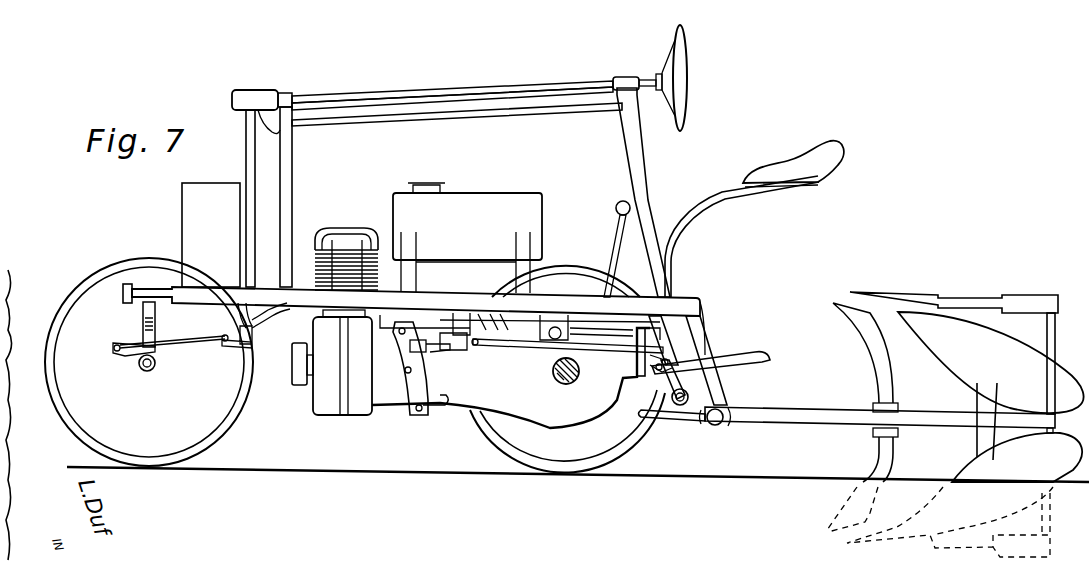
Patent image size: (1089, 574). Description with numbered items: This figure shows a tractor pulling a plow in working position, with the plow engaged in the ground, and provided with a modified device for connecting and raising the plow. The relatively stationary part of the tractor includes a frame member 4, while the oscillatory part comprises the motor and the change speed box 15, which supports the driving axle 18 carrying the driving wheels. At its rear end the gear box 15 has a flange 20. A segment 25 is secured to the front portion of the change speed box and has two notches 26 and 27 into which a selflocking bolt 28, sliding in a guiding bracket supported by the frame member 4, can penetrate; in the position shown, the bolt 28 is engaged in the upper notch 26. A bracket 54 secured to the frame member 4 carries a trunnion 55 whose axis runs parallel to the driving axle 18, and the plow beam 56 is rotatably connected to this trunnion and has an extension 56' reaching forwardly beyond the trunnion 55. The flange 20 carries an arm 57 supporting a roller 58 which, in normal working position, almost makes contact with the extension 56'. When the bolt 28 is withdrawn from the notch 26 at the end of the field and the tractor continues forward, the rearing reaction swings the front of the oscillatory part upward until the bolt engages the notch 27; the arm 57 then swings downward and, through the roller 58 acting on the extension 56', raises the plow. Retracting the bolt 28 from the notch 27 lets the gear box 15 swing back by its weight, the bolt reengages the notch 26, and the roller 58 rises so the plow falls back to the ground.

The frame member 4 is at (467, 238).
The change speed box 15 is at (516, 415).
The driving axle 18 is at (566, 384).
The flange 20 is at (636, 380).
The segment 25 is at (422, 380).
The upper notch 26 is at (414, 350).
The notch 27 is at (412, 402).
The selflocking bolt 28 is at (426, 354).
The bracket 54 is at (706, 332).
The trunnion 55 is at (718, 426).
The plow beam 56 is at (880, 429).
The extension 56' is at (672, 430).
The arm 57 is at (690, 372).
The roller 58 is at (690, 395).